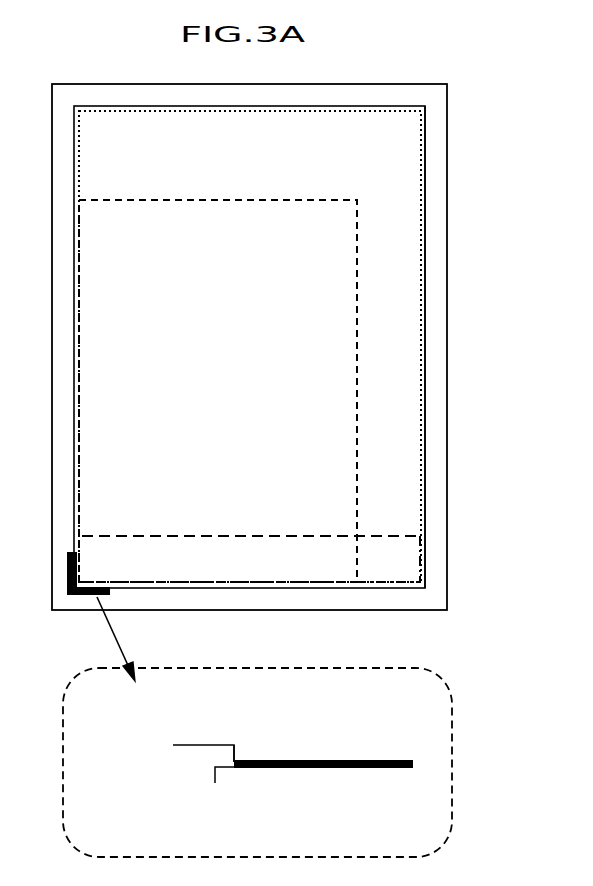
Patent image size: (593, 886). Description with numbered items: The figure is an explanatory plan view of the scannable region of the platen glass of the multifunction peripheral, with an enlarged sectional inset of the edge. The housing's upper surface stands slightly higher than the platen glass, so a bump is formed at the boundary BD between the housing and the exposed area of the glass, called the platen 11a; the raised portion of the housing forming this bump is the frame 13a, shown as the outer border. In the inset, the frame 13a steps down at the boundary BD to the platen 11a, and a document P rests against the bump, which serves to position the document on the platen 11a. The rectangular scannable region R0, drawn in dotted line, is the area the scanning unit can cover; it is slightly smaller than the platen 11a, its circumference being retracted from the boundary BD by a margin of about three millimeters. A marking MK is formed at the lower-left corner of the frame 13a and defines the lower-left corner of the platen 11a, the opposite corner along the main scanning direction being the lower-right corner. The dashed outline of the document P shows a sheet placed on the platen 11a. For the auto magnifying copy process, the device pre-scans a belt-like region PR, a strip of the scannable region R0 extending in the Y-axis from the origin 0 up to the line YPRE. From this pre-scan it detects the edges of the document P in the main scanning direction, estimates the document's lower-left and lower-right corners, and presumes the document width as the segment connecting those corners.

The frame 13a is at (332, 93).
The platen 11a is at (403, 148).
The boundary BD is at (426, 455).
The scannable region R0 is at (427, 219).
The document P is at (357, 360).
The Y-axis pre-scan limit YPRE is at (425, 536).
The belt-like region PR is at (204, 548).
The Y-axis origin 0 is at (425, 583).
The marking MK is at (83, 597).